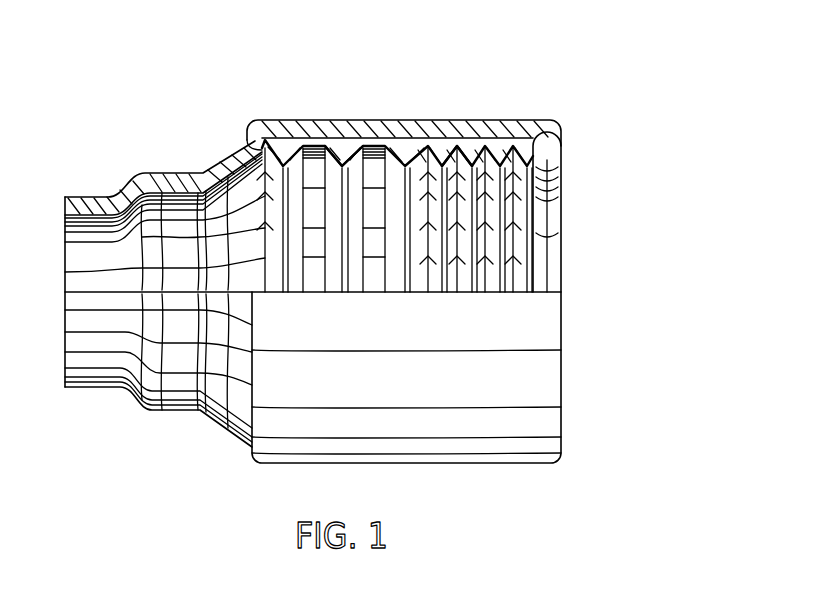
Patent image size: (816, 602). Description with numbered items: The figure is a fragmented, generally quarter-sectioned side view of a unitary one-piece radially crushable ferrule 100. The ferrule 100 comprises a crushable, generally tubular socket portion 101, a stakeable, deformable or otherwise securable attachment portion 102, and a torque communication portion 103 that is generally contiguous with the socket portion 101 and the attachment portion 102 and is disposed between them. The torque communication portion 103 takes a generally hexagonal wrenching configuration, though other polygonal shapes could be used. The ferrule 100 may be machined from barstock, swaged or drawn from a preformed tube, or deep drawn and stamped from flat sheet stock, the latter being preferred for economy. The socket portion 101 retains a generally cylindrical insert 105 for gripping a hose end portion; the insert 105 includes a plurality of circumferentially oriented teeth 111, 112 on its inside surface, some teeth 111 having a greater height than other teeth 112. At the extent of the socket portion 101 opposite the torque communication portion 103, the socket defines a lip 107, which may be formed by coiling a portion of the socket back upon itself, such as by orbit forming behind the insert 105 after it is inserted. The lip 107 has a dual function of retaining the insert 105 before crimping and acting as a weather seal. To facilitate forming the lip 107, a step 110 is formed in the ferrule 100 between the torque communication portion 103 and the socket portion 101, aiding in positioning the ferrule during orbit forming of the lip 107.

The radially crushable ferrule 100 is at (614, 108).
The socket portion 101 is at (469, 107).
The attachment portion 102 is at (95, 178).
The torque communication portion 103 is at (175, 156).
The insert 105 is at (340, 138).
The lip 107 is at (562, 140).
The step 110 is at (240, 132).
The teeth 111 is at (340, 143).
The teeth 112 is at (465, 150).